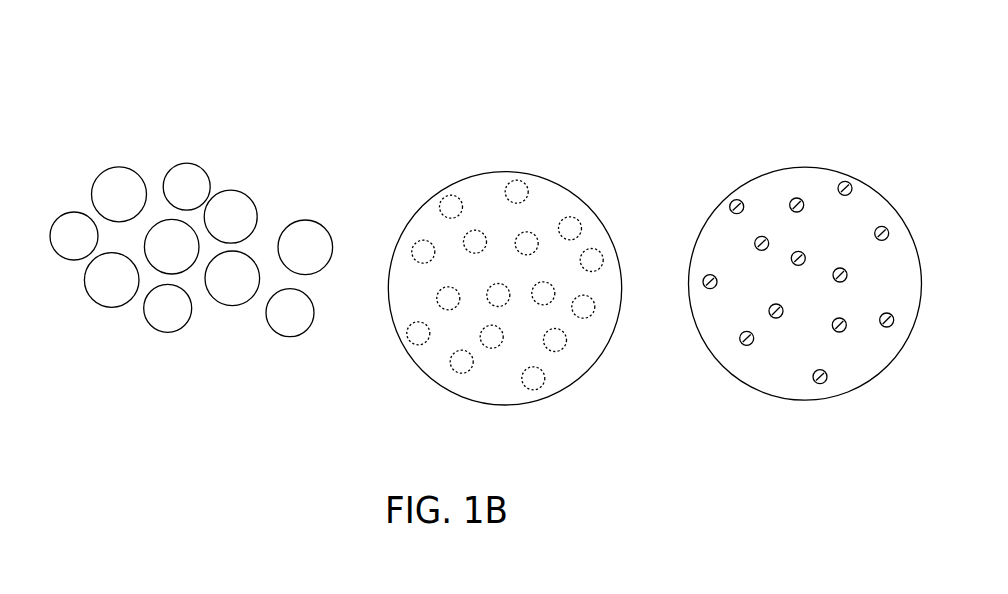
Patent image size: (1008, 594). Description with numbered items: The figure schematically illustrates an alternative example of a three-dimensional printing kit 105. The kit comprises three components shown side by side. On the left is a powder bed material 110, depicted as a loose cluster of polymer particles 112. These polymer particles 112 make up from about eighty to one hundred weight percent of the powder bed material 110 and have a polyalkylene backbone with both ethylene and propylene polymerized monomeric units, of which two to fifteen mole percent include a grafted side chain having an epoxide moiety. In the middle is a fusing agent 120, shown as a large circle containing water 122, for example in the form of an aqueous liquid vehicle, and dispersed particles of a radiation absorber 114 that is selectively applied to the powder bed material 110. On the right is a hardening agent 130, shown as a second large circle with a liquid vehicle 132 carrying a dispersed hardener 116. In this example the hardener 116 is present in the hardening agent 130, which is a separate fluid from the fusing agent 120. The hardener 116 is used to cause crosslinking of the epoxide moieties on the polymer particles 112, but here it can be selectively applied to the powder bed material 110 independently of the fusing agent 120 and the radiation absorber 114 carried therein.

The 3D printing kit 105 is at (128, 46).
The powder bed material 110 is at (122, 140).
The polymer particles 112 is at (110, 282).
The radiation absorber 114 is at (418, 337).
The hardener 116 is at (748, 338).
The fusing agent 120 is at (417, 165).
The water 122 is at (487, 188).
The hardening agent 130 is at (717, 158).
The matrix material of composite body 132 is at (787, 183).